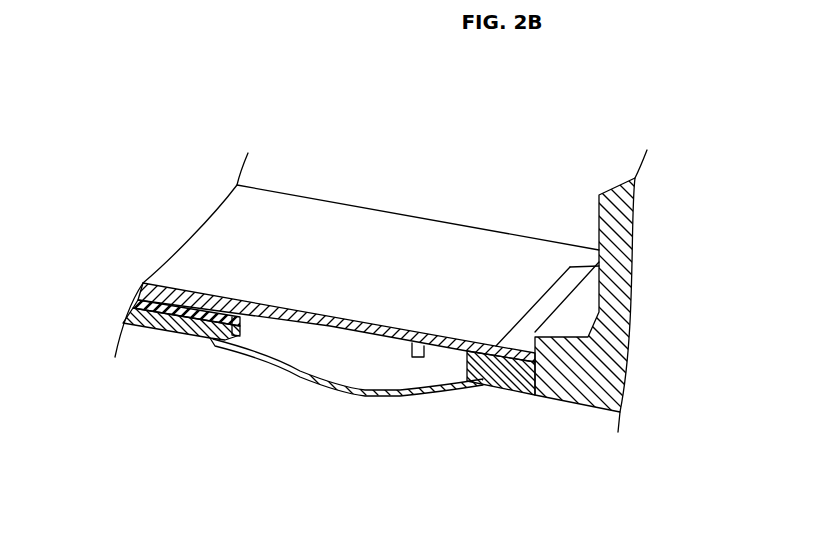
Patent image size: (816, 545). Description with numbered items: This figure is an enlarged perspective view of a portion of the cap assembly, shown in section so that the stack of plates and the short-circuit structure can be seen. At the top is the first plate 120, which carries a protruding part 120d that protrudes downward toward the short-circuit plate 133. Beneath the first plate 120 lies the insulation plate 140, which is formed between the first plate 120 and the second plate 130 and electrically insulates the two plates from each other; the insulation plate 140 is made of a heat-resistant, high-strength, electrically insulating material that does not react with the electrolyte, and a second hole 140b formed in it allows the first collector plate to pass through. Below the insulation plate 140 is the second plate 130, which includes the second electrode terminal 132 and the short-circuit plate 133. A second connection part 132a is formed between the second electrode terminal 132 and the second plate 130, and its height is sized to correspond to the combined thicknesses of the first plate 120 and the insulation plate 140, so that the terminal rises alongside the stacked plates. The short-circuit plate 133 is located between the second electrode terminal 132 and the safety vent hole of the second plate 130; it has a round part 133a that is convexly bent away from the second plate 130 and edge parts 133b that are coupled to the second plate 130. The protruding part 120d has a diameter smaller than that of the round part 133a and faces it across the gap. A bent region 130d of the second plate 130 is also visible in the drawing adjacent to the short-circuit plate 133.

The first plate 120 is at (302, 223).
The protruding part 120d is at (373, 387).
The second plate 130 is at (155, 338).
The bent portion of display panel 130d is at (243, 347).
The second electrode terminal 132 is at (625, 240).
The second connection part 132a is at (577, 305).
The short-circuit plate 133 is at (480, 473).
The round part 133a is at (425, 396).
The edge parts 133b is at (478, 390).
The insulation plate 140 is at (136, 308).
The second hole 140b is at (537, 310).